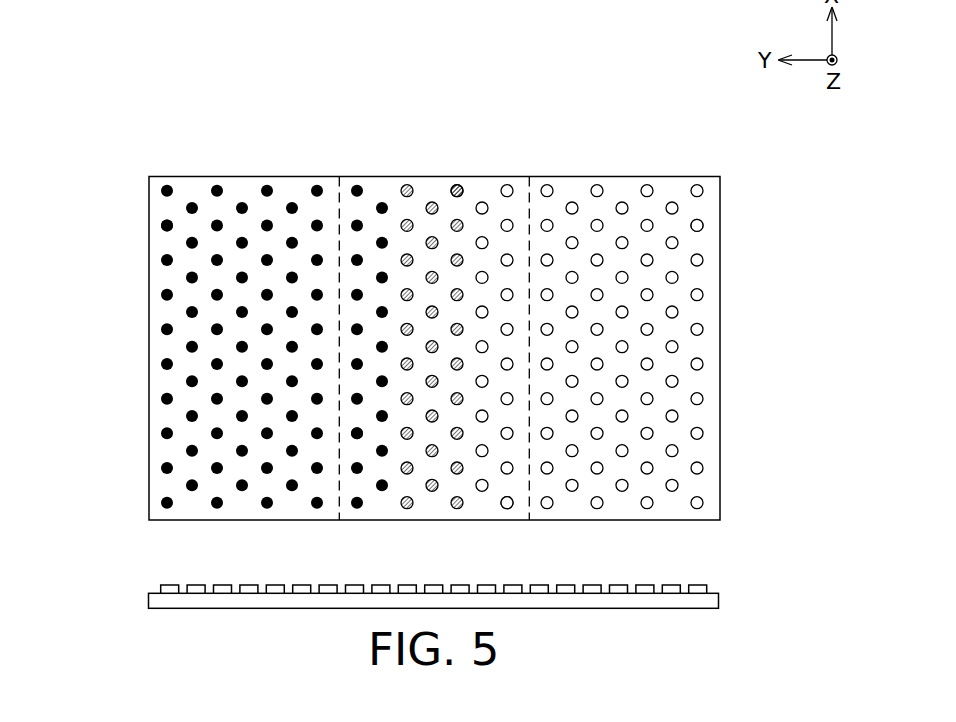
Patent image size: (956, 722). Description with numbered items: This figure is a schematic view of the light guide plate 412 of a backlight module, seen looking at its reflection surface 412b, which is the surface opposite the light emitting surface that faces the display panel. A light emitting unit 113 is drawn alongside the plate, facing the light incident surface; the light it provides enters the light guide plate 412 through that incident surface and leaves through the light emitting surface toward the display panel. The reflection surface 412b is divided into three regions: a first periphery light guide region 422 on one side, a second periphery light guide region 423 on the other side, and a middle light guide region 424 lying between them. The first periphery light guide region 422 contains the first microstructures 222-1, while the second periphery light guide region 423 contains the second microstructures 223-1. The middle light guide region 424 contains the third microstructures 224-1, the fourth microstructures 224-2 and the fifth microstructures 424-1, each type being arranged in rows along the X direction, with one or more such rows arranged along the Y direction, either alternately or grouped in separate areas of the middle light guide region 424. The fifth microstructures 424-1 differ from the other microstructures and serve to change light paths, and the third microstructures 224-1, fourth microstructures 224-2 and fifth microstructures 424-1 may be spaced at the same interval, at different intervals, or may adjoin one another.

The light guide plate 412 is at (122, 114).
The reflection surface 412b is at (738, 142).
The first periphery light guide region 422 is at (245, 187).
The middle light guide region 424 is at (432, 188).
The fifth microstructures 424-1 is at (457, 186).
The second periphery light guide region 423 is at (622, 188).
The first microstructures 222-1 is at (167, 225).
The second microstructures 223-1 is at (703, 225).
The third microstructures 224-1 is at (357, 434).
The fourth microstructures 224-2 is at (510, 508).
The light emitting unit 113 is at (718, 598).